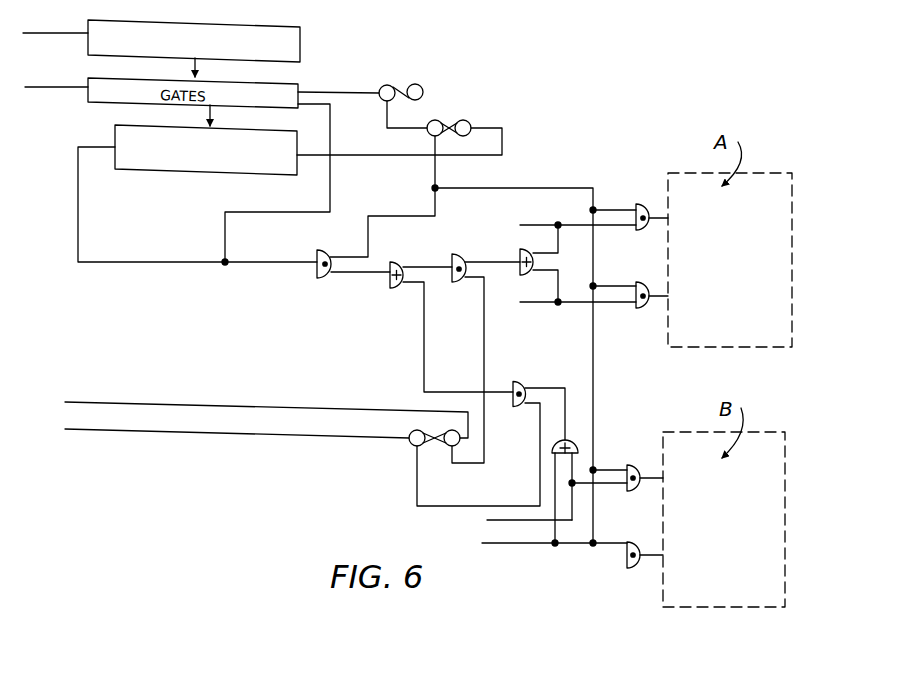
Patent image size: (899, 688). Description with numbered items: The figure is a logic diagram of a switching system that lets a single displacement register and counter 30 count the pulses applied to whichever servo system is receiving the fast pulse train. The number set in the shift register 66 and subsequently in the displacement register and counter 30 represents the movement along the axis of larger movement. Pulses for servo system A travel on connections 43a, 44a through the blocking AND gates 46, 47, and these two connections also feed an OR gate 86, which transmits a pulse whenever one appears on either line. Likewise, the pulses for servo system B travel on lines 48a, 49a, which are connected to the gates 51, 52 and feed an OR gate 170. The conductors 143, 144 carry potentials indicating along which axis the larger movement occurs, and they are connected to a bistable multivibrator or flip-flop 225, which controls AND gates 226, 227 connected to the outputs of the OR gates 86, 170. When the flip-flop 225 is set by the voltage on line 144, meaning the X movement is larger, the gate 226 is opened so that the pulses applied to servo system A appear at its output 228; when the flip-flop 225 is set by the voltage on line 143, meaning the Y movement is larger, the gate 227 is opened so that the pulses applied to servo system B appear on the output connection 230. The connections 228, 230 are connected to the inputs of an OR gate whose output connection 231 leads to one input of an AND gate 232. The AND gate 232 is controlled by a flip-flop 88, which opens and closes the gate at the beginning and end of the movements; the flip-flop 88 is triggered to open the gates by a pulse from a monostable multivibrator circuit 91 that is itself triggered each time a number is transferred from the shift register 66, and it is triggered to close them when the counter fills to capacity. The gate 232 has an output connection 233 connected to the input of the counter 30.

The shift register 66 is at (222, 20).
The displacement register and counter 30 is at (194, 171).
The monostable multivibrator circuit 91 is at (412, 58).
The flip-flop 88 is at (450, 122).
The output connection 233 is at (108, 262).
The AND gate 232 is at (310, 273).
The output connection 231 is at (360, 273).
The output connection 230 is at (423, 310).
The output 228 is at (424, 267).
The AND gate 226 is at (456, 260).
The OR gate 86 is at (519, 255).
The connection 43a is at (543, 226).
The connection 44a is at (558, 304).
The AND gate 46 is at (643, 205).
The AND gate 47 is at (638, 309).
The line 144 is at (236, 386).
The line 143 is at (240, 438).
The flip-flop 225 is at (409, 446).
The AND gate 227 is at (519, 407).
The OR gate 170 is at (578, 446).
The line 48a is at (487, 521).
The line 49a is at (486, 545).
The AND gate 51 is at (636, 448).
The AND gate 52 is at (630, 570).